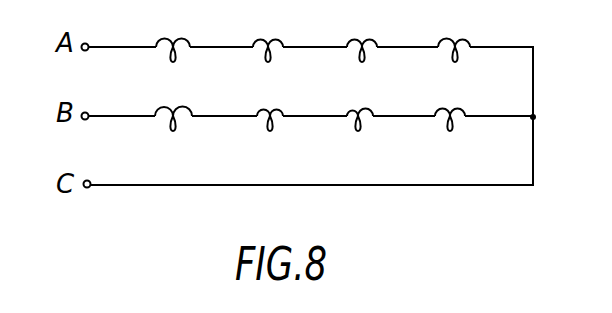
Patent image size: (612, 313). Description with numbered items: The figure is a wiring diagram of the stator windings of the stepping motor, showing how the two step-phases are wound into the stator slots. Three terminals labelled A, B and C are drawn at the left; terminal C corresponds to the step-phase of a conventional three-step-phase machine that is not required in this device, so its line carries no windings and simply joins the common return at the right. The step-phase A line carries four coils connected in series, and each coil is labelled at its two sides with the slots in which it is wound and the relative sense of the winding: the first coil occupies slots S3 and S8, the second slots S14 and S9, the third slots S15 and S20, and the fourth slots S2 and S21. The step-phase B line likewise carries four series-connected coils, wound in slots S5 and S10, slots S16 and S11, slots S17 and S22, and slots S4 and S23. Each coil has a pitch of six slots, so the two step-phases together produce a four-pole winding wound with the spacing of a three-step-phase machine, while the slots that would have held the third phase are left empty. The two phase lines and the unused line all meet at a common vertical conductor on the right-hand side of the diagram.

The stator slot S3 is at (149, 59).
The stator slot S8 is at (191, 59).
The stator slot S14 is at (249, 59).
The stator slot S9 is at (281, 59).
The stator slot S15 is at (342, 59).
The stator slot S20 is at (383, 59).
The stator slot S2 is at (439, 59).
The stator slot S21 is at (474, 59).
The stator slot S5 is at (150, 127).
The stator slot S10 is at (194, 128).
The stator slot S16 is at (251, 129).
The stator slot S11 is at (287, 129).
The stator slot S17 is at (340, 129).
The stator slot S22 is at (379, 129).
The stator slot S4 is at (433, 129).
The stator slot S23 is at (472, 129).